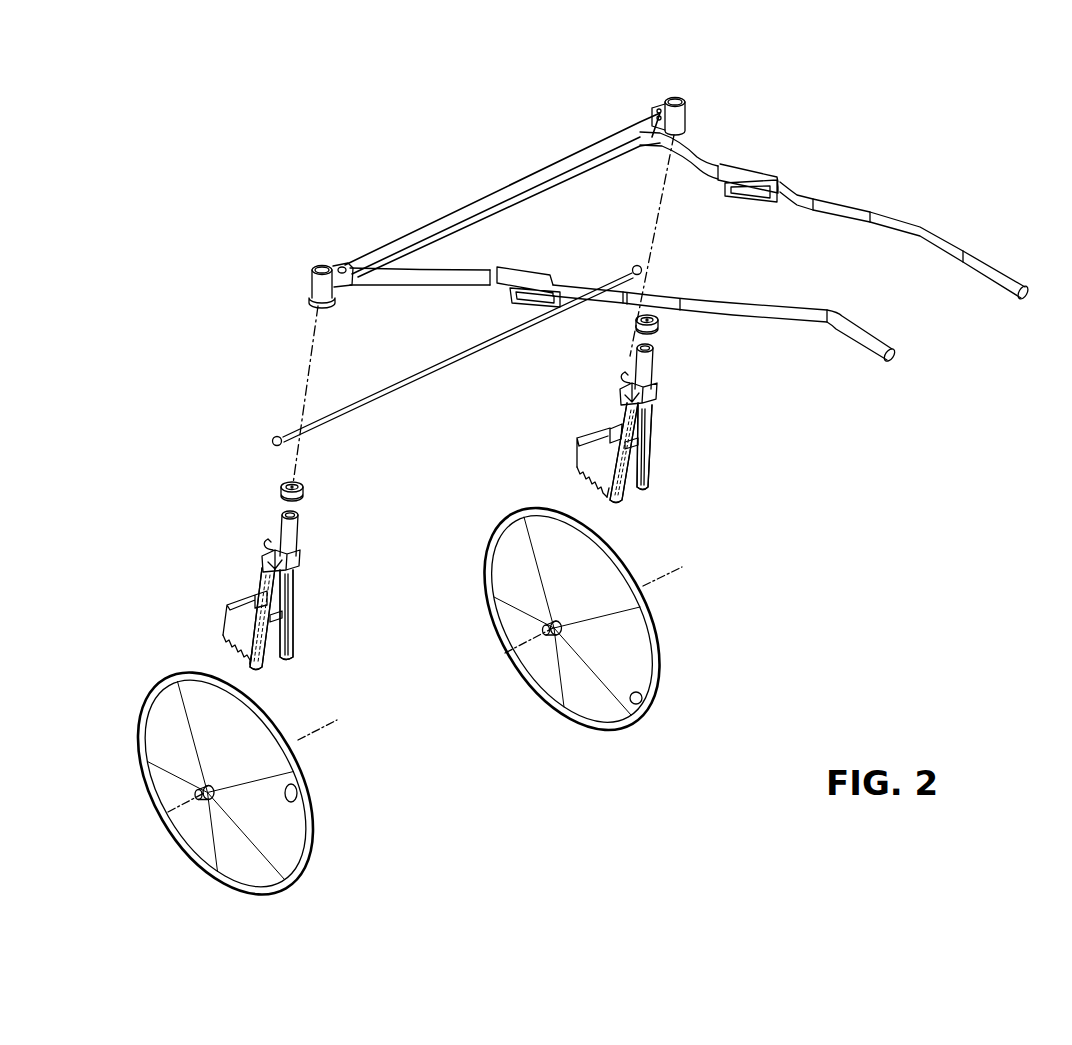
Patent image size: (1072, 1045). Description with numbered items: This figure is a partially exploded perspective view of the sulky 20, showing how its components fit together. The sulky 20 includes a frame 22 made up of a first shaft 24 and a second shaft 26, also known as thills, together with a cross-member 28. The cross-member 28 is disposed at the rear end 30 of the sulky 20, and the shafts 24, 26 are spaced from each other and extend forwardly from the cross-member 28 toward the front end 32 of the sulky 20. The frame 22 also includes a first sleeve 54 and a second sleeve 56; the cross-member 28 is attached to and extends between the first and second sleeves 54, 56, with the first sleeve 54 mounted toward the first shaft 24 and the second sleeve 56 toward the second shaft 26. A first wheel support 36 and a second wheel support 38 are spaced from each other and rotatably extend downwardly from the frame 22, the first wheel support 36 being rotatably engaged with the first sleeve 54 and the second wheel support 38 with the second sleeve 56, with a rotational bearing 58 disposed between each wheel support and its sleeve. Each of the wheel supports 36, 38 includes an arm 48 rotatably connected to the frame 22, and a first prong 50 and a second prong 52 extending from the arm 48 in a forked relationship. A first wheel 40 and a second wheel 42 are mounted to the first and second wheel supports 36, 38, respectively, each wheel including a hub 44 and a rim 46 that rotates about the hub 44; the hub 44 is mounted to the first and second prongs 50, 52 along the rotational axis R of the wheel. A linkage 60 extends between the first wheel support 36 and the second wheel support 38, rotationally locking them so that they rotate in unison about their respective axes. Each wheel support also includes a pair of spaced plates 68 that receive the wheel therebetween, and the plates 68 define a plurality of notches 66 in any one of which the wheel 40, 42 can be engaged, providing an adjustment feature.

The sulky 20 is at (568, 506).
The frame 22 is at (494, 197).
The first shaft 24 is at (867, 340).
The second shaft 26 is at (943, 243).
The cross-member 28 is at (434, 226).
The rear end 30 is at (632, 266).
The front end 32 is at (700, 274).
The first wheel support 36 is at (307, 589).
The second wheel support 38 is at (675, 414).
The first wheel 40 is at (306, 853).
The second wheel 42 is at (602, 727).
The hub 44 is at (555, 636).
The rim 46 is at (641, 698).
The arm 48 is at (648, 366).
The first prong 50 is at (616, 497).
The second prong 52 is at (645, 473).
The first sleeve 54 is at (315, 288).
The second sleeve 56 is at (690, 124).
The rotational bearing 58 is at (658, 328).
The linkage 60 is at (430, 368).
The notches 66 is at (578, 488).
The plates 68 is at (616, 435).
The rotational axis R is at (516, 647).